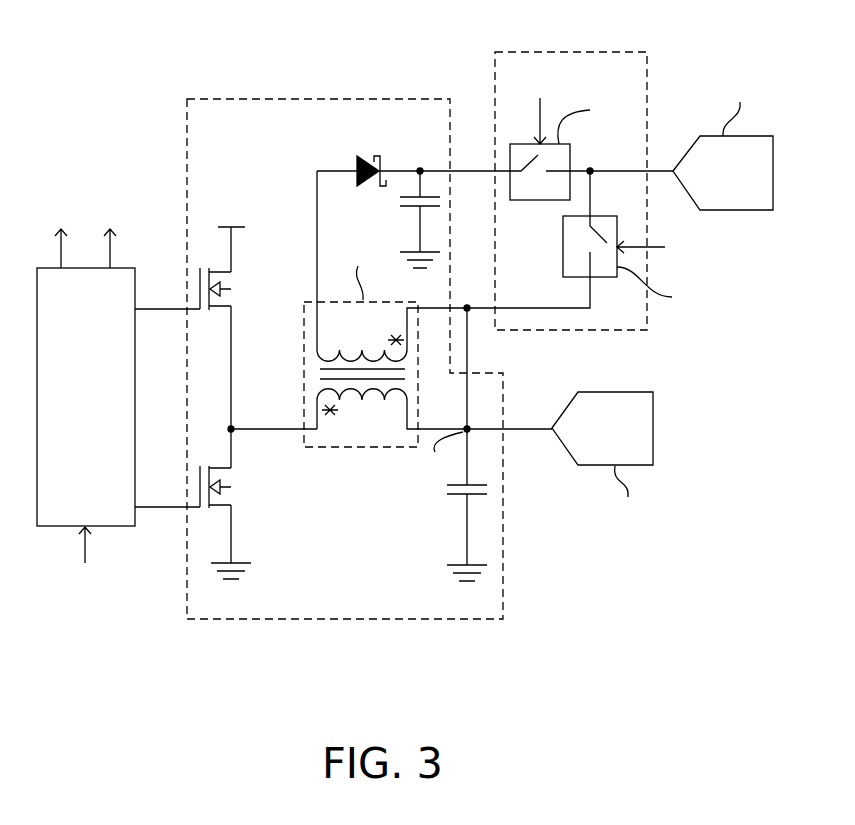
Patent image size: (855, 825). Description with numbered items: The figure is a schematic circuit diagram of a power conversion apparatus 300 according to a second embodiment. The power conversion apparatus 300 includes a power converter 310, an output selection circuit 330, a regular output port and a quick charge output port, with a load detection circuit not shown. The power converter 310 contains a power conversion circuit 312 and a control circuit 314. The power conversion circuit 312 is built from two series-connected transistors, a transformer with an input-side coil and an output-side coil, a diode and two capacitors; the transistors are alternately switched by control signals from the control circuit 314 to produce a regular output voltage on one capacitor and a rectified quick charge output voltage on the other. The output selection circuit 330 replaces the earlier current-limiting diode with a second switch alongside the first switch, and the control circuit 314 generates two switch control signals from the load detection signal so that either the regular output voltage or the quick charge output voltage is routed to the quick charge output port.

The power conversion apparatus 300 is at (403, 325).
The power converter 310 is at (100, 18).
The power conversion circuit 312 is at (263, 97).
The control circuit 314 is at (118, 527).
The output selection circuit 330 is at (647, 70).